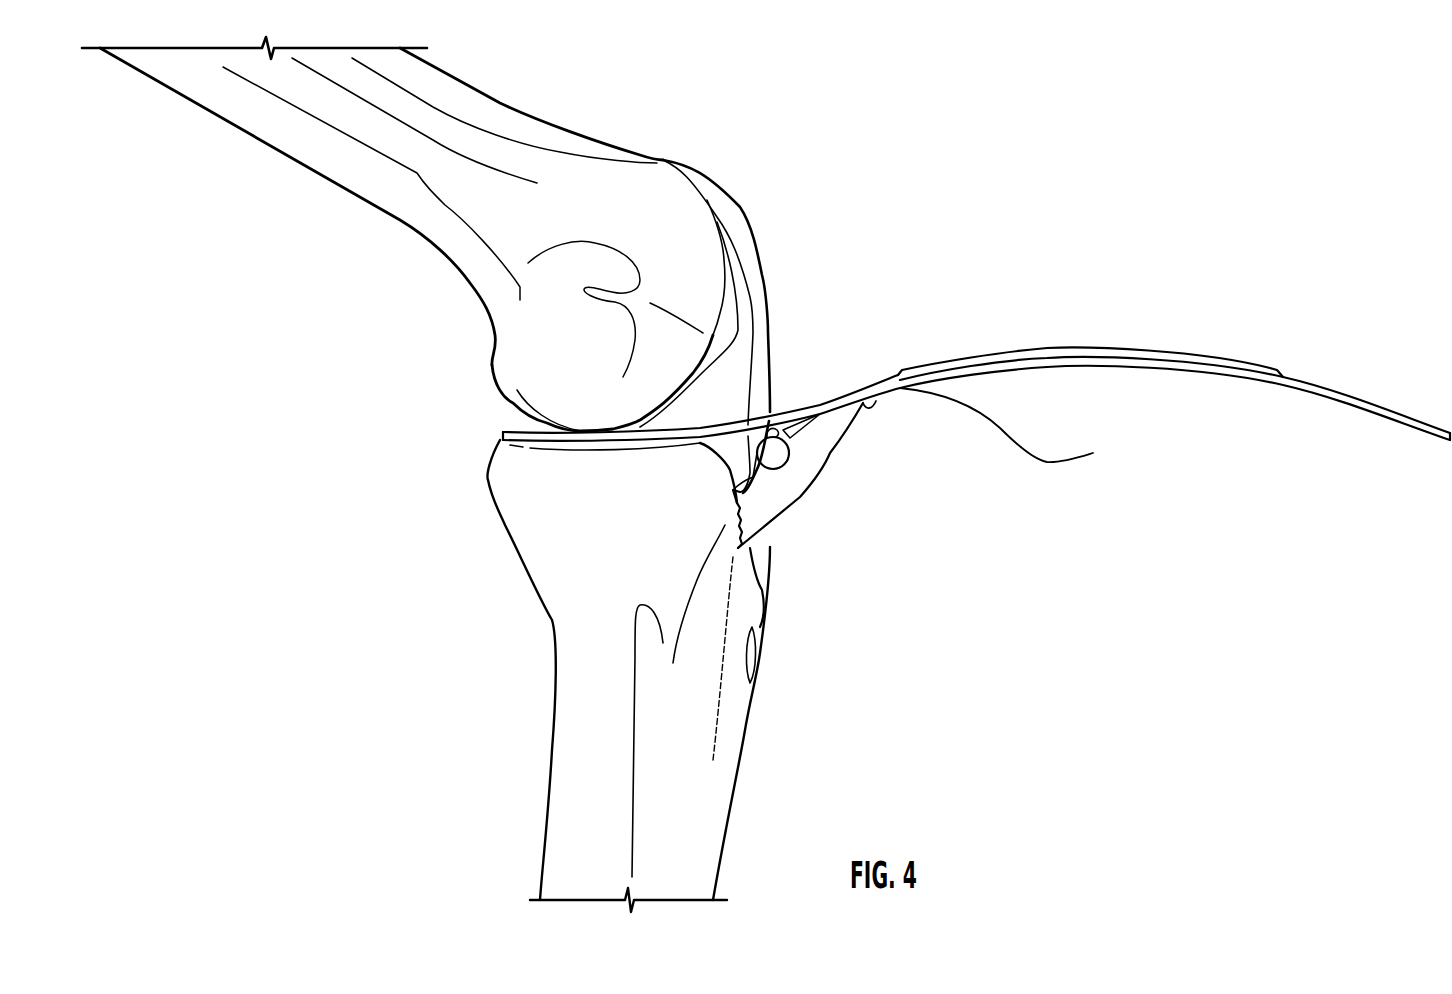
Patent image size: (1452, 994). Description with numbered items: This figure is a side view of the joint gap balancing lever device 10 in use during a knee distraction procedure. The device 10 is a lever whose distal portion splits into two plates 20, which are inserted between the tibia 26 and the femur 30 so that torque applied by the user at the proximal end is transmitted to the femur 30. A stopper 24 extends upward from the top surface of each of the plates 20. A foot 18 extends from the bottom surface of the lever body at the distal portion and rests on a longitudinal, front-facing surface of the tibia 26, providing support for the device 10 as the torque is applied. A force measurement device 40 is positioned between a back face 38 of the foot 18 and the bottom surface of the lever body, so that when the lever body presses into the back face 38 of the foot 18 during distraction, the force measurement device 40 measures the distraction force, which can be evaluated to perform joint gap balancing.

The joint gap balancing lever device 10 is at (1263, 370).
The foot 18 is at (793, 497).
The plates 20 is at (513, 428).
The stopper 24 is at (723, 361).
The tibia 26 is at (737, 767).
The femur 30 is at (568, 128).
The back face 38 is at (870, 400).
The force measurement device 40 is at (1043, 462).